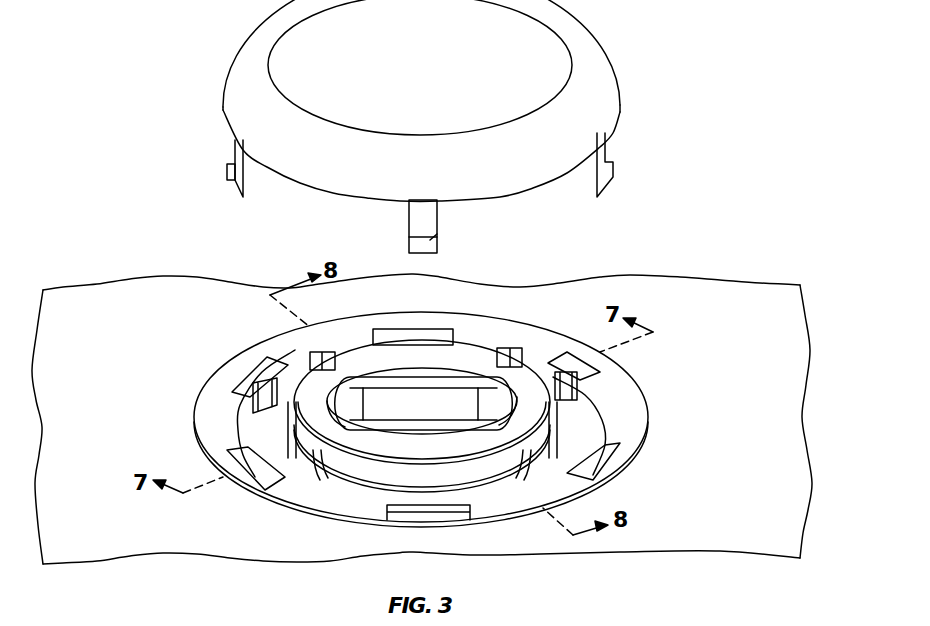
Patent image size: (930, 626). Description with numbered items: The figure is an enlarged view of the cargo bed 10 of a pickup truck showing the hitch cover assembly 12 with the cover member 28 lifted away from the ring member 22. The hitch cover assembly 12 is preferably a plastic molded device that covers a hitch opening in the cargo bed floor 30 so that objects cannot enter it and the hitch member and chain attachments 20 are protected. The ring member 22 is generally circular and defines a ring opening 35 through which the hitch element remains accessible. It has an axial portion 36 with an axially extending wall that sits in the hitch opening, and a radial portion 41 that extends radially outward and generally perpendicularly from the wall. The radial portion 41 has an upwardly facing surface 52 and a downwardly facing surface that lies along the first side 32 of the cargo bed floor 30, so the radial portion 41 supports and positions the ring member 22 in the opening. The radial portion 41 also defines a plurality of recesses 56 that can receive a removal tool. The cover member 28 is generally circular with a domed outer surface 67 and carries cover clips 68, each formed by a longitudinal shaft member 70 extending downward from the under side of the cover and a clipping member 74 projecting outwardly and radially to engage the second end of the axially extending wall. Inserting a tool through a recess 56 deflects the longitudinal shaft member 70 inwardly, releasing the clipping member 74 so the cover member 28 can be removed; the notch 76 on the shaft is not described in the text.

The cargo bed 10 is at (692, 287).
The hitch cover assembly 12 is at (672, 113).
The chain attachments 20 is at (460, 352).
The ring member 22 is at (545, 342).
The cover member 28 is at (602, 108).
The cargo bed floor 30 is at (788, 508).
The first side 32 is at (728, 521).
The ring opening 35 is at (590, 400).
The axial portion 36 is at (293, 370).
The radial portion 41 is at (517, 498).
The upwardly facing surface 52 is at (208, 400).
The recesses 56 is at (413, 333).
The domed outer surface 67 is at (573, 38).
The cover clips 68 is at (247, 172).
The longitudinal shaft member 70 is at (409, 210).
The clipping member 74 is at (409, 243).
The leg notch 76 is at (433, 233).